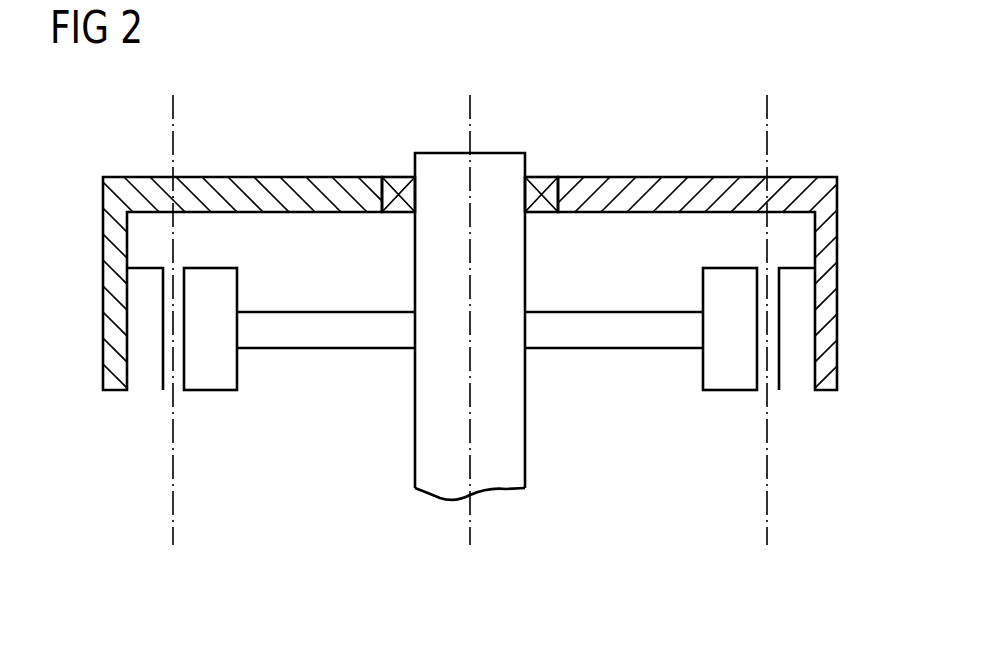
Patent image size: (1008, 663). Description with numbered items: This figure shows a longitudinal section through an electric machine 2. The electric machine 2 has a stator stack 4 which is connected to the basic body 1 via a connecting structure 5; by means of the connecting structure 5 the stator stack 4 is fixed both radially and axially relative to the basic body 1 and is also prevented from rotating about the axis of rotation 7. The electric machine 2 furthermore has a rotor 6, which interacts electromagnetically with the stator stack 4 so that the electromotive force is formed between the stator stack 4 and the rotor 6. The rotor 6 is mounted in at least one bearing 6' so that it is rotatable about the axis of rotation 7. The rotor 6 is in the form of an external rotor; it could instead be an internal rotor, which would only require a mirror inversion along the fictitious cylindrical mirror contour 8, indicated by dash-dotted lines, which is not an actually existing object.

The basic body 1 is at (515, 425).
The electric machine 2 is at (811, 119).
The stator stack 4 is at (210, 384).
The connecting structure 5 is at (330, 338).
The rotor 6 is at (797, 362).
The bearing 6' is at (470, 158).
The axis of rotation 7 is at (473, 113).
The mirror contour 8 is at (174, 523).